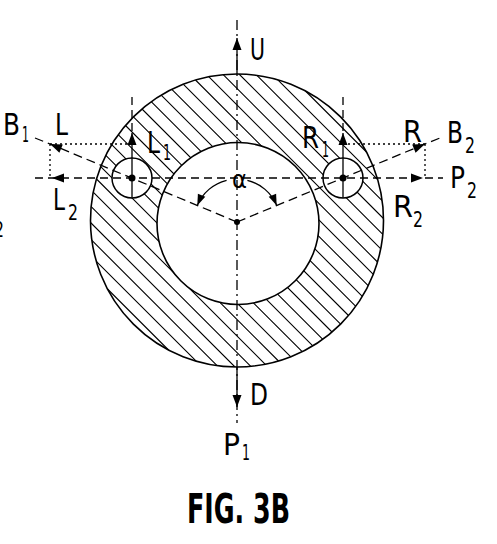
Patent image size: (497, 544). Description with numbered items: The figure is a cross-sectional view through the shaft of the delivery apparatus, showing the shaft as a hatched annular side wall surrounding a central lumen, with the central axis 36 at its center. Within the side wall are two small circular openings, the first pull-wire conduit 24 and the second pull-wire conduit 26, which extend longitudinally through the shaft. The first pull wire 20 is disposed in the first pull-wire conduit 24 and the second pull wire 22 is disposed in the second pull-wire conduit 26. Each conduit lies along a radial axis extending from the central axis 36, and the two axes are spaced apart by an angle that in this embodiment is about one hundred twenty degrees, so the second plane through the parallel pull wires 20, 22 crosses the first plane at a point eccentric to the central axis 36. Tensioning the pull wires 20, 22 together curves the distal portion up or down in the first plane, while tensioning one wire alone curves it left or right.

The first pull wire 20 is at (130, 199).
The second pull wire 22 is at (345, 199).
The first pull-wire conduit 24 is at (128, 205).
The second pull-wire conduit 26 is at (348, 205).
The central axis 36 is at (239, 224).